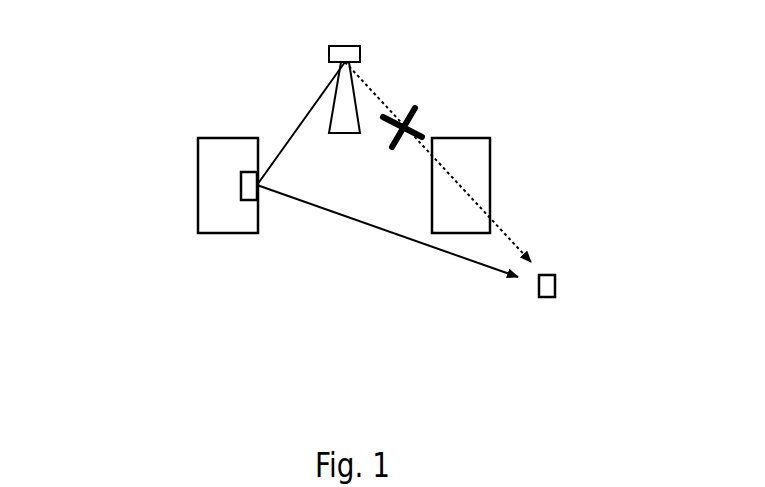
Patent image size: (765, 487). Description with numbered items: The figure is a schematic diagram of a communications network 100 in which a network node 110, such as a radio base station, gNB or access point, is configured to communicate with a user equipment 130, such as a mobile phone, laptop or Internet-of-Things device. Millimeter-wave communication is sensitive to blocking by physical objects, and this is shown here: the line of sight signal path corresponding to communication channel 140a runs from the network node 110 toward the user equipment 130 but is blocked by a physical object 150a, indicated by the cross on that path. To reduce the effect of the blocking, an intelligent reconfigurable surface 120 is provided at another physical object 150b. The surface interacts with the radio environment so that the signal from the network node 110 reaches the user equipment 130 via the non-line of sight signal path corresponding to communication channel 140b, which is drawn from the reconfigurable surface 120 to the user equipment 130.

The communications network 100 is at (145, 63).
The network node 110 is at (360, 52).
The intelligent reconfigurable surface 120 is at (233, 187).
The user equipment 130 is at (550, 297).
The communication channel 140a is at (393, 110).
The communication channel 140b is at (387, 233).
The physical object 150a is at (490, 162).
The physical object 150b is at (230, 233).